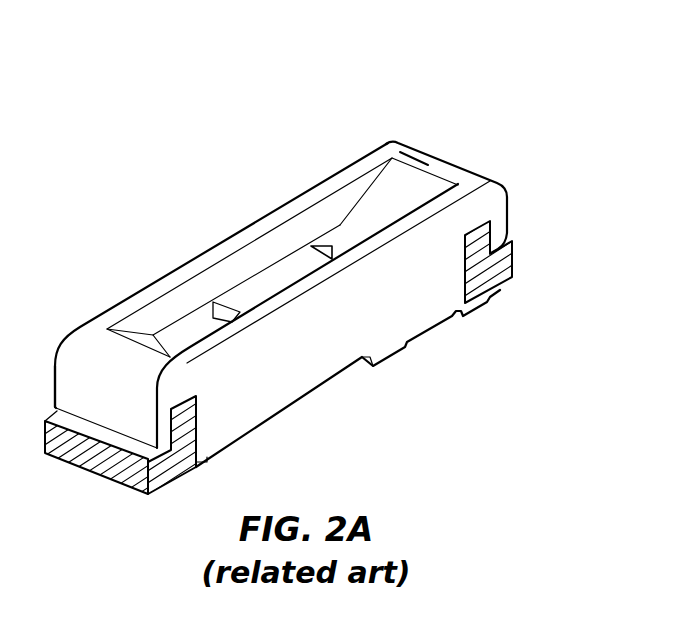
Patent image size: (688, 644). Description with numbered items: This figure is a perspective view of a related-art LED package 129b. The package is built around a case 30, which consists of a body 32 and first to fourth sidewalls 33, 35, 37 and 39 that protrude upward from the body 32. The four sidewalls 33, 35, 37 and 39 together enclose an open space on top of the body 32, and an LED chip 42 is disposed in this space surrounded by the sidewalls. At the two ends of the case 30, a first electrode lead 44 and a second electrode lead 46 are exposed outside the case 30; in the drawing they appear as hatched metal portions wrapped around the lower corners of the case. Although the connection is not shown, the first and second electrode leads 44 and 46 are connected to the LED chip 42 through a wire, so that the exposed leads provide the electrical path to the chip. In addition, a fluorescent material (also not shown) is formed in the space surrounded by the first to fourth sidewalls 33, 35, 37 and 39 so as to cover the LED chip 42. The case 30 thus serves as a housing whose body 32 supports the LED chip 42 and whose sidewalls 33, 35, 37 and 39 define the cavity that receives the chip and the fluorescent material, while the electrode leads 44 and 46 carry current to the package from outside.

The LED package 129b is at (236, 23).
The case 30 is at (340, 101).
The body 32 is at (343, 327).
The first sidewall 33 is at (313, 277).
The second sidewall 35 is at (258, 291).
The third sidewall 37 is at (386, 143).
The fourth sidewall 39 is at (110, 361).
The LED chip 42 is at (233, 273).
The first electrode lead 44 is at (184, 432).
The second electrode lead 46 is at (485, 267).